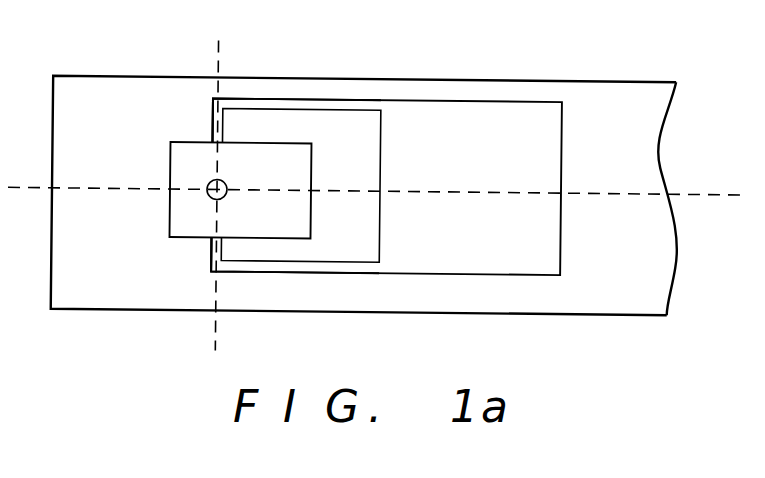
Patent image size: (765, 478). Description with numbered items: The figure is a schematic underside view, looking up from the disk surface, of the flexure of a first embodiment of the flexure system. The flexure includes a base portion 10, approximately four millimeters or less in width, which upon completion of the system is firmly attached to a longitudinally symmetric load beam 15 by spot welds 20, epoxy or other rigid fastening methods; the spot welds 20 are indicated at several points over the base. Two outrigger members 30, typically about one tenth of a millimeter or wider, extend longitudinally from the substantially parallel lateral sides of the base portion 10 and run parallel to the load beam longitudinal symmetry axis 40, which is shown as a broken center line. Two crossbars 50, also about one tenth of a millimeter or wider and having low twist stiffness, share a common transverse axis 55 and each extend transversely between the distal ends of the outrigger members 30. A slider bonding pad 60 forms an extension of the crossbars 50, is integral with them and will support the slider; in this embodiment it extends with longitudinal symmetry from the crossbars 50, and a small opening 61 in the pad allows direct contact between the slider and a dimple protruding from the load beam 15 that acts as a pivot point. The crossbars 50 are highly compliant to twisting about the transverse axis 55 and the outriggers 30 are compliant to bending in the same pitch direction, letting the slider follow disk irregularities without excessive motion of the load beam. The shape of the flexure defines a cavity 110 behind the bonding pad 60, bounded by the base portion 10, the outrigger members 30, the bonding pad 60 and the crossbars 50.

The base portion 10 is at (477, 109).
The load beam 15 is at (594, 101).
The spot welds 20 is at (421, 124).
The outrigger members 30 is at (299, 101).
The load beam longitudinal symmetry axis 40 is at (642, 196).
The crossbars 50 is at (208, 118).
The common transverse axis 55 is at (219, 60).
The slider bonding pad 60 is at (183, 234).
The opening 61 is at (228, 190).
The cavity 110 is at (332, 124).